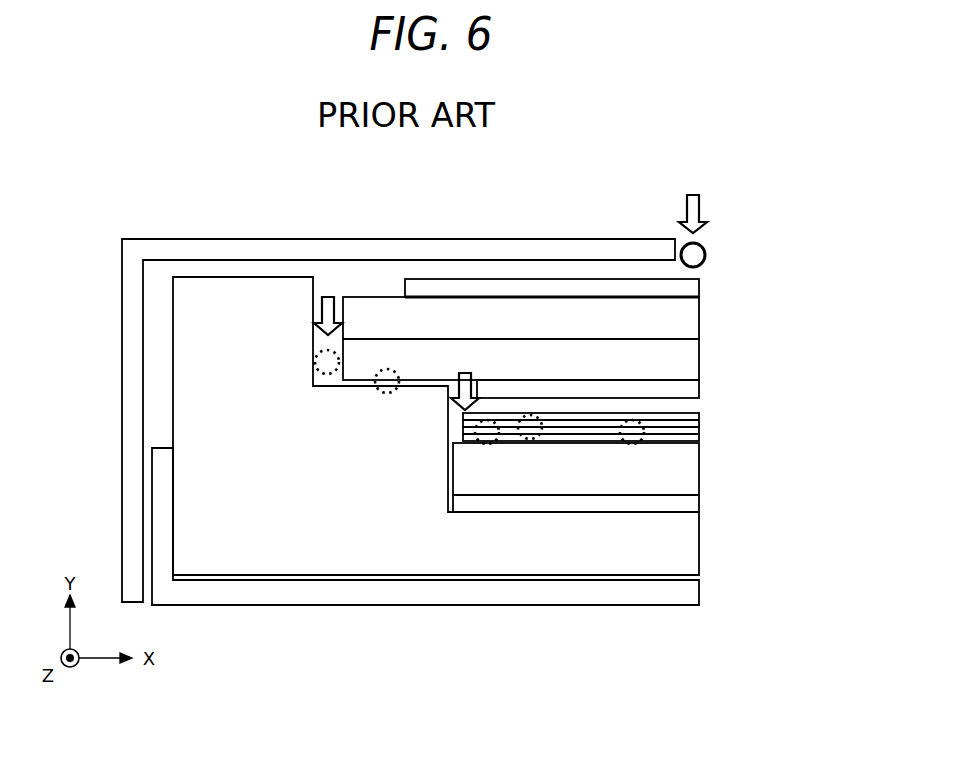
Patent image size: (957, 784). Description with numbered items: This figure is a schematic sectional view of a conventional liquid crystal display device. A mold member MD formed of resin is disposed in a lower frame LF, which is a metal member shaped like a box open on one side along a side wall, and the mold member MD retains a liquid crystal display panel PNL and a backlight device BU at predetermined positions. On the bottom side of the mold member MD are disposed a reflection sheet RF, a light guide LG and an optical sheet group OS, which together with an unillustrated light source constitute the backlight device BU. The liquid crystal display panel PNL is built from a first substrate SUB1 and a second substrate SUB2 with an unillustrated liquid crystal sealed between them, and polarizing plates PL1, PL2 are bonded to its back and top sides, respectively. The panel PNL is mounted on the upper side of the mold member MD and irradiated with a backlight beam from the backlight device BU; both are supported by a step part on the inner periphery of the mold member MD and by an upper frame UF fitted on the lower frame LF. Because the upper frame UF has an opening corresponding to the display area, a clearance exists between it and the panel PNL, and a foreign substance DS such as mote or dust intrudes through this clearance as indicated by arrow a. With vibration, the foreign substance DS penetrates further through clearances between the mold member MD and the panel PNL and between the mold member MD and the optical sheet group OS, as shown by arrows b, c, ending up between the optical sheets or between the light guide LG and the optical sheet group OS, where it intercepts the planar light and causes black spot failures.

The upper frame UF is at (448, 250).
The mold member MD is at (687, 549).
The lower frame LF is at (687, 592).
The liquid crystal display panel PNL is at (611, 334).
The polarizing plate PL2 is at (688, 291).
The second substrate SUB2 is at (686, 323).
The first substrate SUB1 is at (686, 362).
The polarizing plate PL1 is at (642, 390).
The backlight device BU is at (662, 462).
The optical sheet group OS is at (705, 412).
The light guide LG is at (687, 471).
The reflection sheet RF is at (625, 502).
The foreign substance DS is at (705, 251).
The arrow a is at (702, 210).
The arrow b is at (333, 305).
The arrow c is at (471, 387).